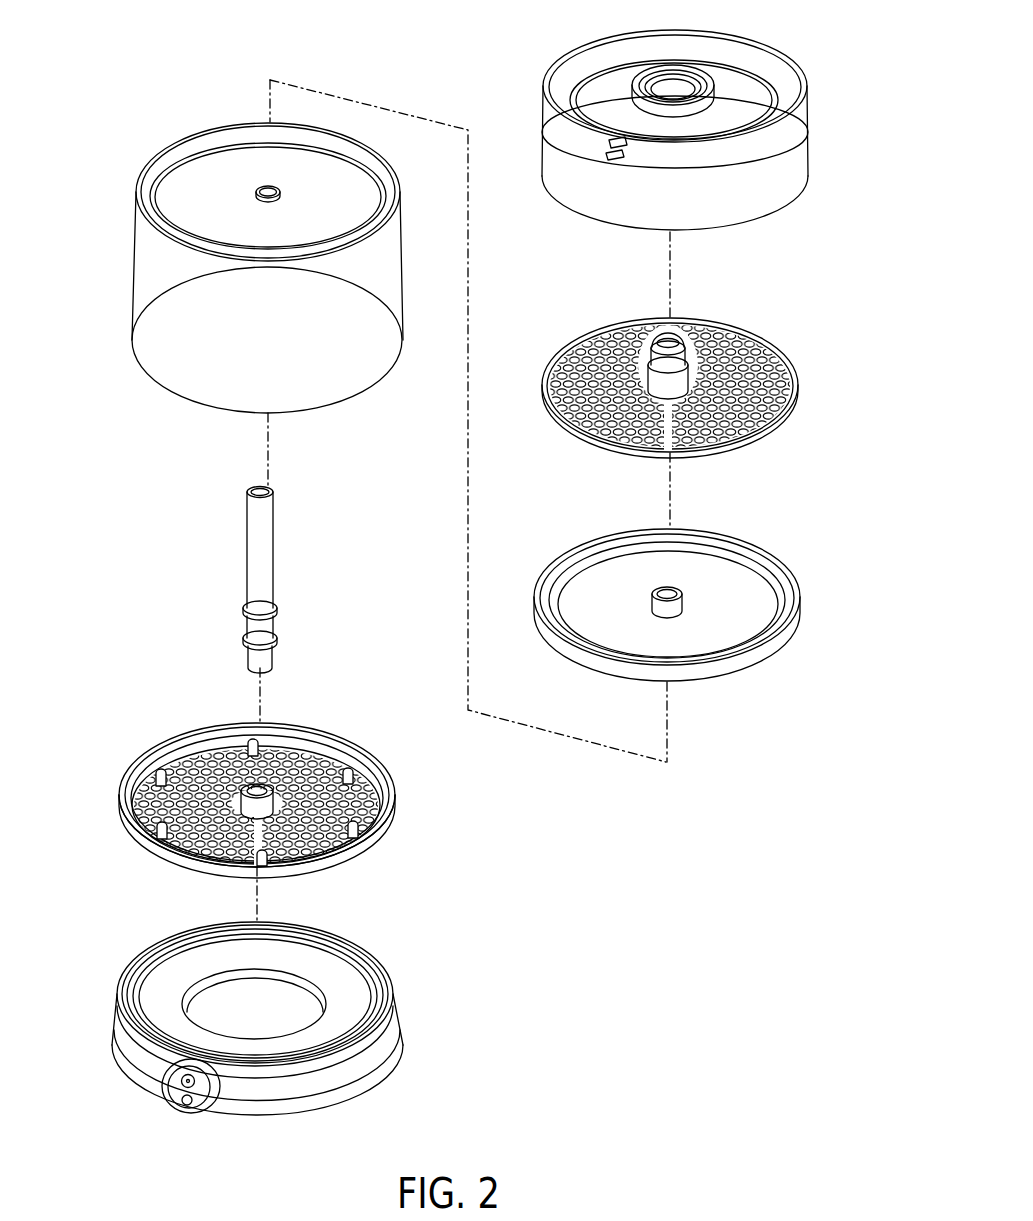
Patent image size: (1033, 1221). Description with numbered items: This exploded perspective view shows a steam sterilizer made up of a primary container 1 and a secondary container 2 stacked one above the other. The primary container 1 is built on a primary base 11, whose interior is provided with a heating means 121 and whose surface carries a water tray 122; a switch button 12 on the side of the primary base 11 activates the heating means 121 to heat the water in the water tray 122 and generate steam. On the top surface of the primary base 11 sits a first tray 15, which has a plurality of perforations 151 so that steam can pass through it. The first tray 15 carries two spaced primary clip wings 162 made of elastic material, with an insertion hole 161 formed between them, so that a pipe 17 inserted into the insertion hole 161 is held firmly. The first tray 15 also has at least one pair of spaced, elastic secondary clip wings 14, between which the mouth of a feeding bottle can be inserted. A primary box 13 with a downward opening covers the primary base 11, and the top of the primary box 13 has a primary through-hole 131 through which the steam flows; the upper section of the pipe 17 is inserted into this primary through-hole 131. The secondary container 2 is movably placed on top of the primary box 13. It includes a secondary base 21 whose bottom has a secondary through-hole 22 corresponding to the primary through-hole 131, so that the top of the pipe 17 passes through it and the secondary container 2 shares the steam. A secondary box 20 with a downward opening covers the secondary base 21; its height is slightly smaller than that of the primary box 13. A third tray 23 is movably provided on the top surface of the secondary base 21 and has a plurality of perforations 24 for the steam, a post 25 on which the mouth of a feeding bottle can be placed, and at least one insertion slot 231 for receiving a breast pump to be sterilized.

The primary container 1 is at (112, 267).
The secondary container 2 is at (827, 187).
The primary base 11 is at (293, 1012).
The switch button 12 is at (180, 1090).
The heating means 121 is at (222, 1017).
The water tray 122 is at (348, 1017).
The primary box 13 is at (290, 255).
The primary through-hole 131 is at (258, 185).
The secondary clip wings 14 is at (357, 768).
The first tray 15 is at (280, 787).
The perforations 151 is at (383, 798).
The insertion hole 161 is at (320, 752).
The primary clip wings 162 is at (212, 753).
The pipe 17 is at (287, 567).
The secondary box 20 is at (792, 62).
The secondary base 21 is at (699, 590).
The secondary through-hole 22 is at (657, 588).
The third tray 23 is at (653, 374).
The insertion slot 231 is at (565, 347).
The perforations 24 is at (728, 328).
The post 25 is at (602, 326).